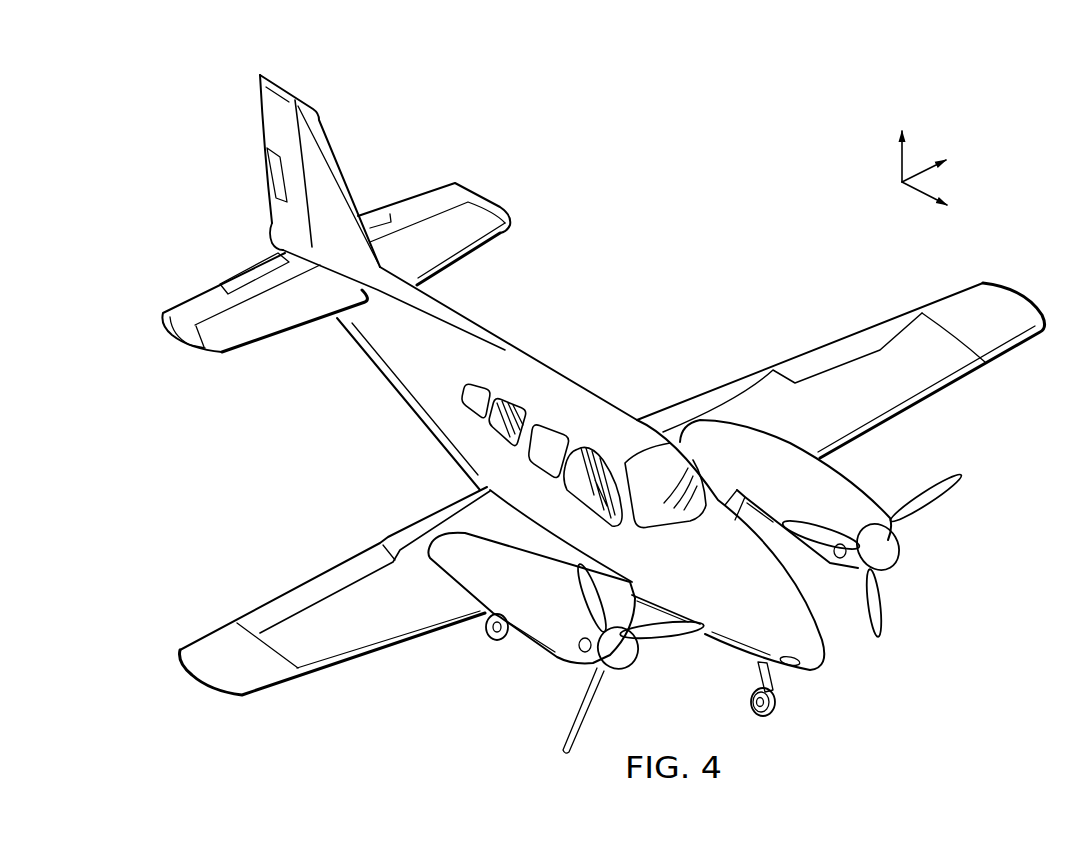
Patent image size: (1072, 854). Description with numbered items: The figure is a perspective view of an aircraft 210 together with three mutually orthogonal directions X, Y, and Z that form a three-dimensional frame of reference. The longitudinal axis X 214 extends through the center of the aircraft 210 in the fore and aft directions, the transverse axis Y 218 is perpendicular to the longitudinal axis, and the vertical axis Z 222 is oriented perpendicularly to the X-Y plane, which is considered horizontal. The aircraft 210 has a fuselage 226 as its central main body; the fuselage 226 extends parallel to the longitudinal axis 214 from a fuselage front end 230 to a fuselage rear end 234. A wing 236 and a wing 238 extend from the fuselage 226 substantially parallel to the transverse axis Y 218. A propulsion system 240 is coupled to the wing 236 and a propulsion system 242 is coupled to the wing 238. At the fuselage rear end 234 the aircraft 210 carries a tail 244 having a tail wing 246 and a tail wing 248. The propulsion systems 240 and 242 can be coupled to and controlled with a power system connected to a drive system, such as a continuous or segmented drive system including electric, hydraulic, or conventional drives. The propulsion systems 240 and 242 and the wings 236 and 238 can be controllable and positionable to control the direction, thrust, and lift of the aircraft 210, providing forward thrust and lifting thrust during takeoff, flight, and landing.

The aircraft 210 is at (719, 117).
The longitudinal axis X 214 is at (923, 196).
The transverse axis Y 218 is at (926, 172).
The vertical axis Z 222 is at (900, 159).
The fuselage 226 is at (612, 383).
The fuselage front end 230 is at (815, 687).
The fuselage rear end 234 is at (230, 226).
The wing 236 is at (968, 397).
The wing 238 is at (350, 680).
The propulsion system 240 is at (880, 490).
The propulsion system 242 is at (520, 657).
The tail 244 is at (377, 144).
The tail wing 246 is at (487, 268).
The tail wing 248 is at (268, 355).